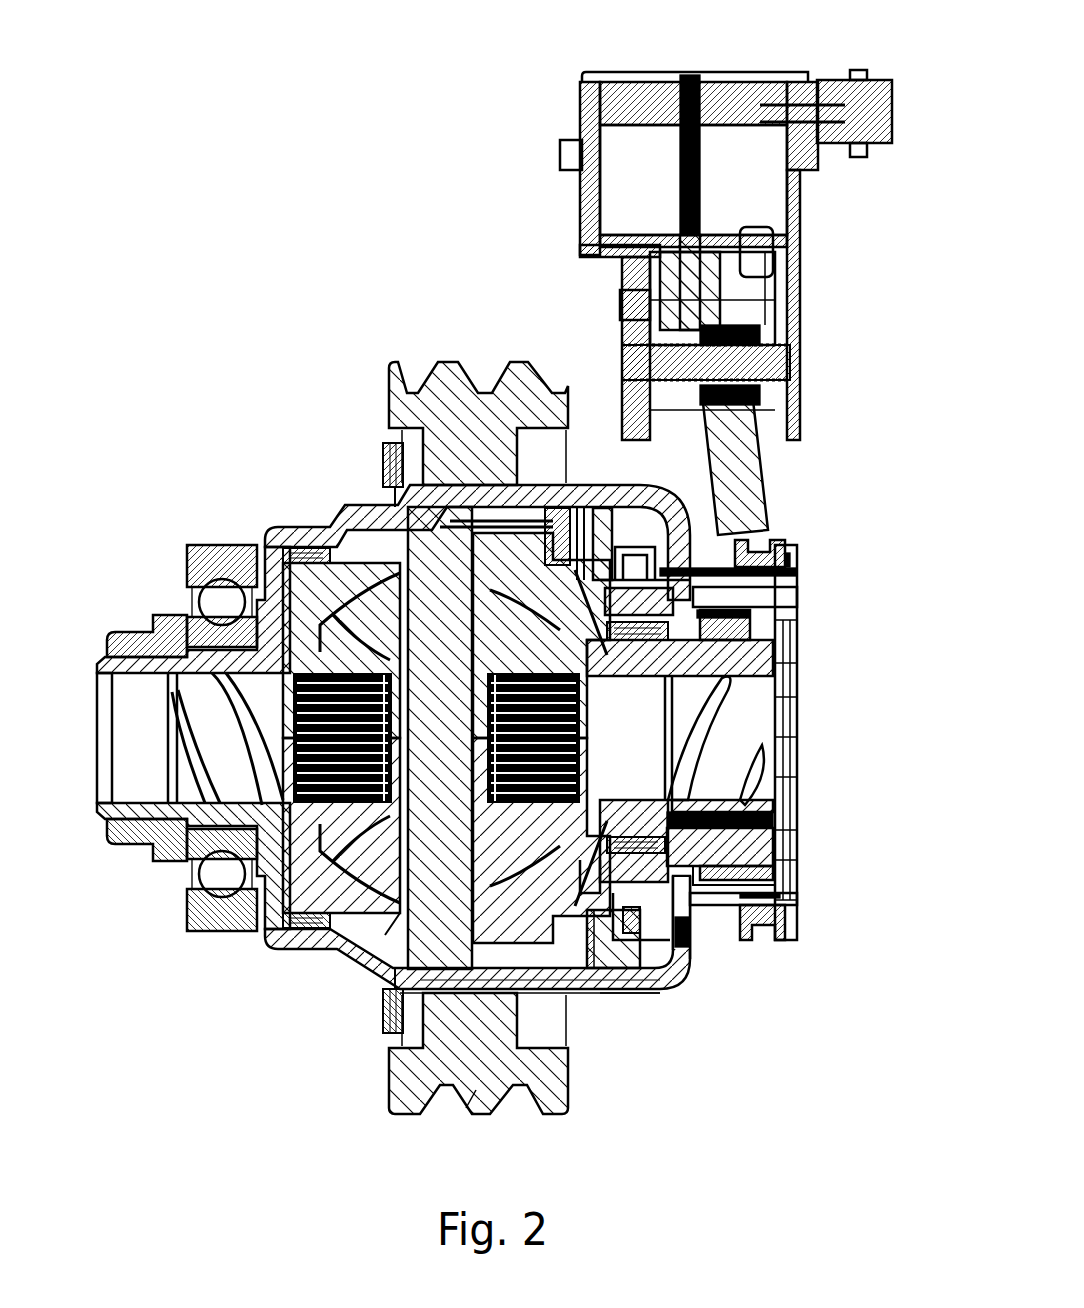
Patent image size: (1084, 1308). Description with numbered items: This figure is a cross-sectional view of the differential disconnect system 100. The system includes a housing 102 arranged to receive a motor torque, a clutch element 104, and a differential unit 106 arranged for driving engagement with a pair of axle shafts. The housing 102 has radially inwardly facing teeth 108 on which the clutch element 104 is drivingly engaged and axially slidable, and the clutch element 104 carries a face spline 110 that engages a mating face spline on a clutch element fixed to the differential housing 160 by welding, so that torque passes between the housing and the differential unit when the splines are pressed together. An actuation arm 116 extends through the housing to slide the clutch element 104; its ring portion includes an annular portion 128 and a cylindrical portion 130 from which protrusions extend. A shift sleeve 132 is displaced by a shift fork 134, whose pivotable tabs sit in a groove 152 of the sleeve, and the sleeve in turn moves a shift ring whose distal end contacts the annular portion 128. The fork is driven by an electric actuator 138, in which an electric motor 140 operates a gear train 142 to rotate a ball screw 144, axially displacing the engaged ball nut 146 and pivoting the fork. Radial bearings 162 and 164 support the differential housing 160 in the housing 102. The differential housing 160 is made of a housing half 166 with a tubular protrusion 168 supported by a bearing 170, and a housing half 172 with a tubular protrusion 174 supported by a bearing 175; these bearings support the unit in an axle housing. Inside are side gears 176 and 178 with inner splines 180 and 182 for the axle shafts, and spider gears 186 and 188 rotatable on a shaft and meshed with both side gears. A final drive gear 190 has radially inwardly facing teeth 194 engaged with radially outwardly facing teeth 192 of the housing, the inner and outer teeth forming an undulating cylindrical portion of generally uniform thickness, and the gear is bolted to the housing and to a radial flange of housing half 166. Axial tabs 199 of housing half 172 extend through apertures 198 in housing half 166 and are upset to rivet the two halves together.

The differential disconnect system 100 is at (368, 356).
The housing 102 is at (680, 975).
The clutch element 104 is at (660, 530).
The differential unit 106 is at (262, 948).
The radially inwardly facing teeth 108 is at (527, 517).
The face spline 110 is at (683, 490).
The actuation arm 116 is at (797, 590).
The annular portion 128 is at (675, 560).
The cylindrical portion 130 is at (735, 605).
The shift sleeve 132 is at (785, 556).
The shift fork 134 is at (740, 412).
The electric actuator 138 is at (582, 233).
The electric motor 140 is at (705, 72).
The gear train 142 is at (620, 330).
The ball screw 144 is at (765, 358).
The ball nut 146 is at (745, 325).
The groove 152 is at (762, 936).
The differential housing 160 is at (388, 935).
The radial bearing 162 is at (707, 800).
The radial bearing 164 is at (300, 548).
The housing half 166 is at (352, 512).
The tubular protrusion 168 is at (190, 645).
The bearing 170 is at (200, 555).
The housing half 172 is at (590, 970).
The tubular protrusion 174 is at (770, 828).
The bearing 175 is at (797, 863).
The side gear 176 is at (547, 842).
The side gear 178 is at (200, 875).
The inner splines 180 is at (590, 707).
The inner splines 182 is at (297, 740).
The spider gear 186 is at (397, 640).
The spider gear 188 is at (360, 920).
The final drive gear 190 is at (500, 1090).
The radially outwardly facing teeth 192 is at (640, 990).
The radially inwardly facing teeth 194 is at (468, 1105).
The apertures 198 is at (392, 995).
The axial tabs 199 is at (380, 1000).